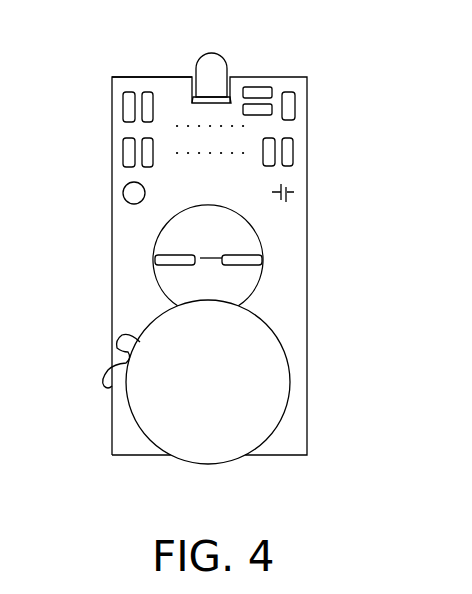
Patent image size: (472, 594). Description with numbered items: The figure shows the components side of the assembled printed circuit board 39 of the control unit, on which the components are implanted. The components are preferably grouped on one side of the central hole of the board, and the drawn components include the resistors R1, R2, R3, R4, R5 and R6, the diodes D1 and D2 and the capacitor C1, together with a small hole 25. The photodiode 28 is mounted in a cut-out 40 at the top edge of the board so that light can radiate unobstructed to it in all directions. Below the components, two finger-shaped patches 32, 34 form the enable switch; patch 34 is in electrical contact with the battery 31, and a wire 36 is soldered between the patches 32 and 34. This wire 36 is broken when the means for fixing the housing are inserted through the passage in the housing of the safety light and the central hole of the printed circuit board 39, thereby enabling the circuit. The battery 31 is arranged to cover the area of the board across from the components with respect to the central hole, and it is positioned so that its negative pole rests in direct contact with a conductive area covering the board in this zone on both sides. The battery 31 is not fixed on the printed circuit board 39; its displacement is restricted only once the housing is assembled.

The printed circuit board 39 is at (300, 311).
The cut-out 40 is at (186, 77).
The photodiode 28 is at (227, 73).
The resistor R3 is at (260, 86).
The diode D2 is at (296, 110).
The diode D1 is at (147, 92).
The resistor R2 is at (124, 105).
The resistor R1 is at (124, 152).
The resistor R6 is at (147, 167).
The resistor R5 is at (293, 153).
The resistor R4 is at (270, 167).
The capacitor C1 is at (290, 194).
The mounting hole 25 is at (123, 195).
The finger-shaped patch 34 is at (156, 258).
The finger-shaped patch 32 is at (255, 261).
The wire 36 is at (200, 258).
The battery 31 is at (250, 430).